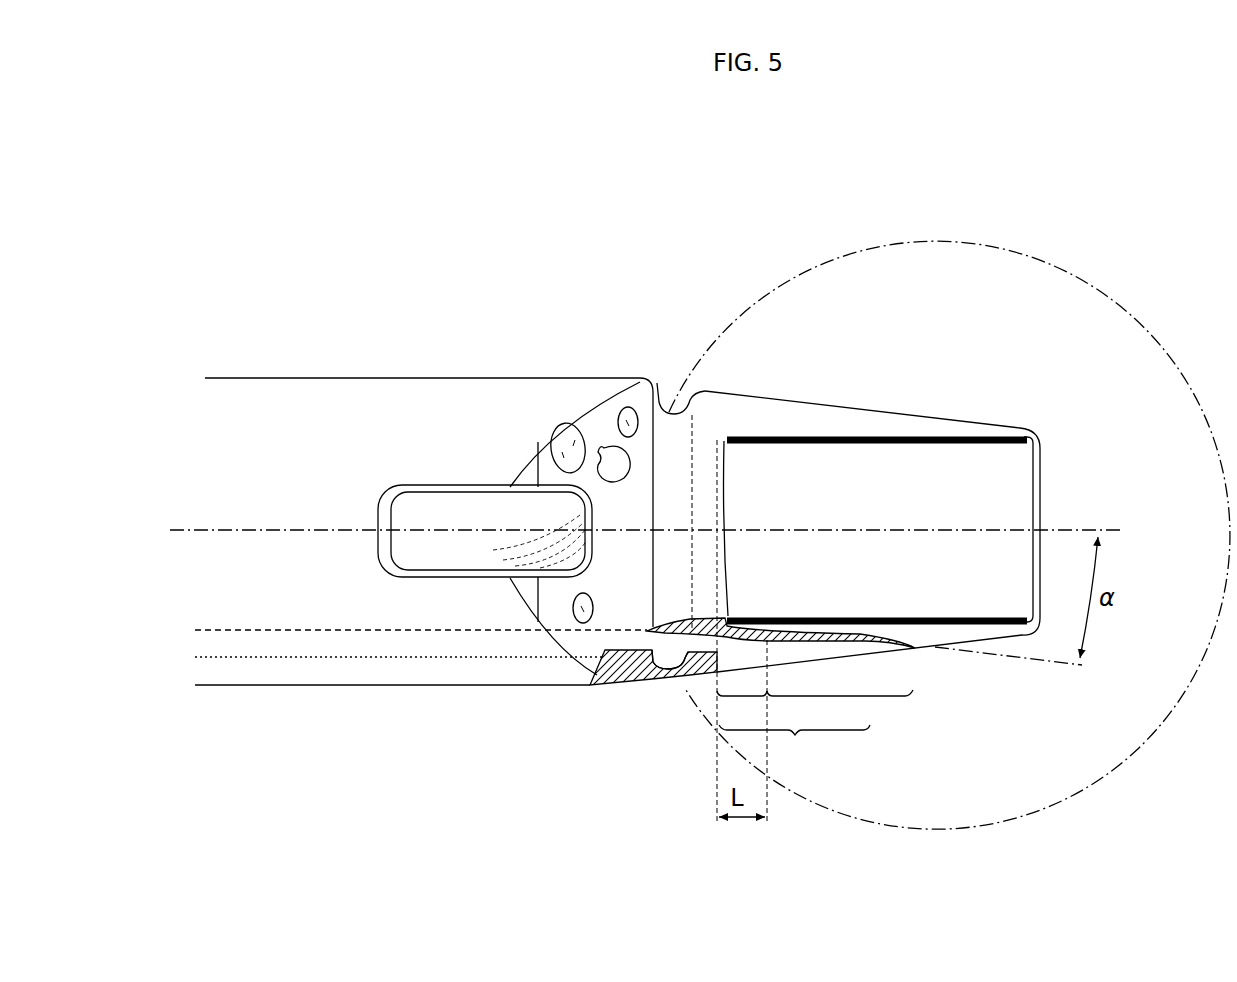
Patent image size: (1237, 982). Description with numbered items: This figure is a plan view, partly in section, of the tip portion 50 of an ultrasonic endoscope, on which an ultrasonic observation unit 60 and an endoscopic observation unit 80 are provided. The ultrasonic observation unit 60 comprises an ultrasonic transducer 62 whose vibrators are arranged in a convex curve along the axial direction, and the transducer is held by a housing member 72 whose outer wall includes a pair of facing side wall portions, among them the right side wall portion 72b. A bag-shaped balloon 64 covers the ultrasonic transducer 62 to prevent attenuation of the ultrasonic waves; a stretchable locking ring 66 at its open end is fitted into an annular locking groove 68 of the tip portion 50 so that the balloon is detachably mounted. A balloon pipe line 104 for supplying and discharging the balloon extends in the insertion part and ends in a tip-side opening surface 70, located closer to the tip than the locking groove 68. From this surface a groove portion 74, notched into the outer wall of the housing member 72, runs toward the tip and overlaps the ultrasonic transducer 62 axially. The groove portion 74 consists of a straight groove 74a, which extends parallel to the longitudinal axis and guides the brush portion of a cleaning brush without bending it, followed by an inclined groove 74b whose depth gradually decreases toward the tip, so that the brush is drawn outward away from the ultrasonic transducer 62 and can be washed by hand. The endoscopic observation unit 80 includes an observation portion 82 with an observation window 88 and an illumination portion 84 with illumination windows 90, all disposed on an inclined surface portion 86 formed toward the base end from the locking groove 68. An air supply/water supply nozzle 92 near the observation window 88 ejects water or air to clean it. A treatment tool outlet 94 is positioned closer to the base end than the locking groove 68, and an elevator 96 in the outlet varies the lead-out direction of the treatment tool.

The tip portion 50 is at (1061, 246).
The ultrasonic observation unit 60 is at (899, 429).
The ultrasonic transducer 62 is at (1020, 580).
The balloon 64 is at (949, 237).
The locking ring 66 is at (662, 683).
The locking groove 68 is at (676, 672).
The tip-side opening surface 70 is at (724, 644).
The housing member 72 is at (967, 641).
The right side wall portion 72b is at (838, 408).
The groove portion 74 is at (794, 746).
The straight groove 74a is at (756, 697).
The inclined groove 74b is at (838, 697).
The endoscopic observation unit 80 is at (613, 337).
The observation portion 82 is at (581, 400).
The illumination portion 84 is at (660, 392).
The inclined surface portion 86 is at (559, 618).
The observation window 88 is at (557, 430).
The illumination windows 90 is at (630, 405).
The air supply/water supply nozzle 92 is at (626, 466).
The treatment tool outlet 94 is at (371, 574).
The elevator 96 is at (490, 500).
The balloon pipe line 104 is at (345, 657).